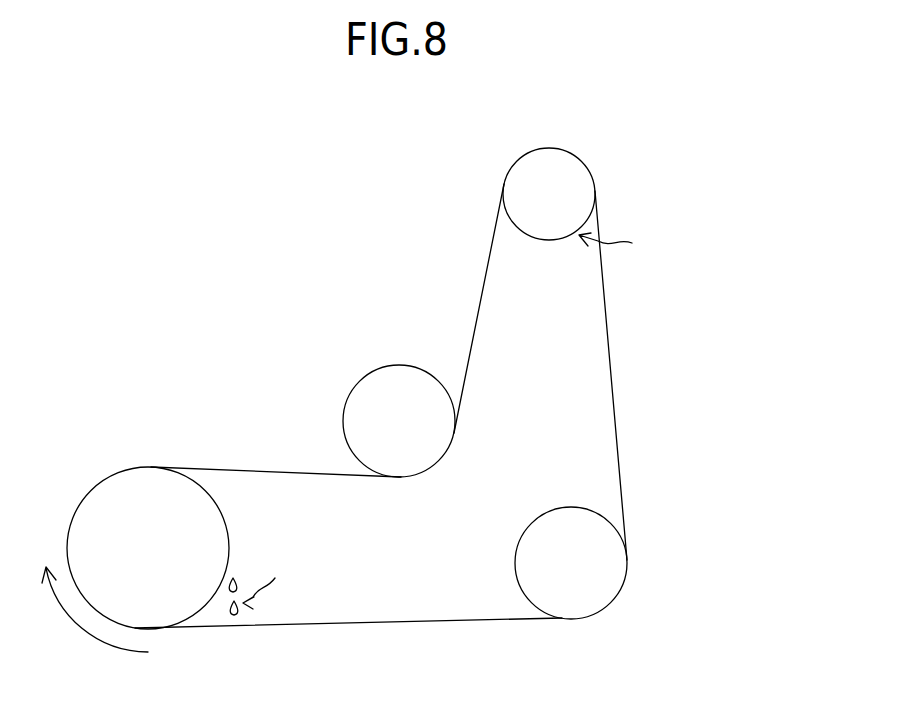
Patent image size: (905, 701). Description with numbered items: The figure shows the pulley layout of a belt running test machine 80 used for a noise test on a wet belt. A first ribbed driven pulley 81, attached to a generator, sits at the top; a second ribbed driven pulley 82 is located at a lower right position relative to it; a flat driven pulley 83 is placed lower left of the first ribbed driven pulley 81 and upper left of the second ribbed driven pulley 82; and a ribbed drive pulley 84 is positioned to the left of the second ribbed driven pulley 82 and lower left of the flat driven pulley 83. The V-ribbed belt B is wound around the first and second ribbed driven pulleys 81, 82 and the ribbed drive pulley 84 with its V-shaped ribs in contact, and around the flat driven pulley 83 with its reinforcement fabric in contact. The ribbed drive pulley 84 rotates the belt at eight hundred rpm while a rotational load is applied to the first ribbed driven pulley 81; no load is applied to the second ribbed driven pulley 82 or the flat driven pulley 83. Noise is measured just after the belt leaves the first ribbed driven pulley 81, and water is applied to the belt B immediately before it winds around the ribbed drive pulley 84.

The belt running test machine 80 is at (229, 186).
The first ribbed driven pulley 81 is at (572, 175).
The second ribbed driven pulley 82 is at (605, 593).
The flat driven pulley 83 is at (392, 378).
The ribbed drive pulley 84 is at (112, 493).
The V-ribbed belt B is at (608, 352).